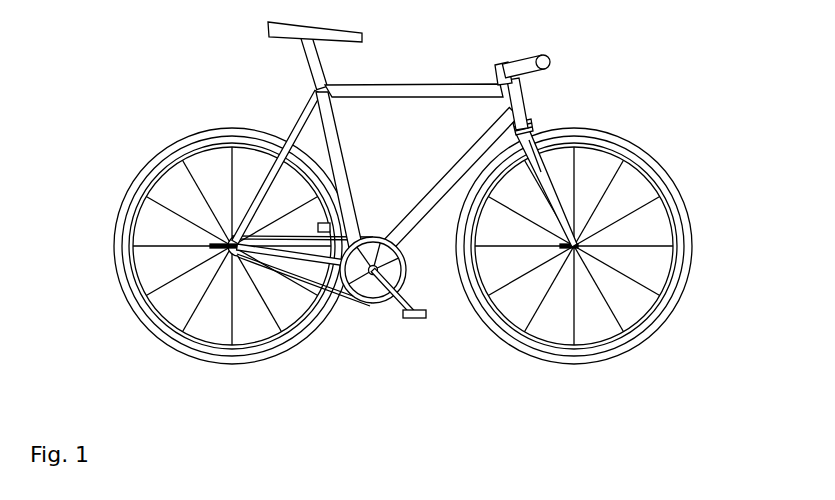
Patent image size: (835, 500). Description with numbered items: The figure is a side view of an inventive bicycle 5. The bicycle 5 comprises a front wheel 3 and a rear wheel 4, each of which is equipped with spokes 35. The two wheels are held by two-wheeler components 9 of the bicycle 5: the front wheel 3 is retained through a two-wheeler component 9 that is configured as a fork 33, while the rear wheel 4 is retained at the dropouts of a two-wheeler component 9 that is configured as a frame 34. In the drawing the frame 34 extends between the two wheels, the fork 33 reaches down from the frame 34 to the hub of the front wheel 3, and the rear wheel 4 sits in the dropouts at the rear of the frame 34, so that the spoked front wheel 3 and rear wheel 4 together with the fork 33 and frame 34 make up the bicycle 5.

The bicycle 5 is at (193, 59).
The rear wheel 4 is at (123, 202).
The front wheel 3 is at (672, 182).
The spokes 35 is at (616, 246).
The two-wheeler component 9 is at (382, 92).
The frame 34 is at (432, 92).
The fork 33 is at (538, 168).